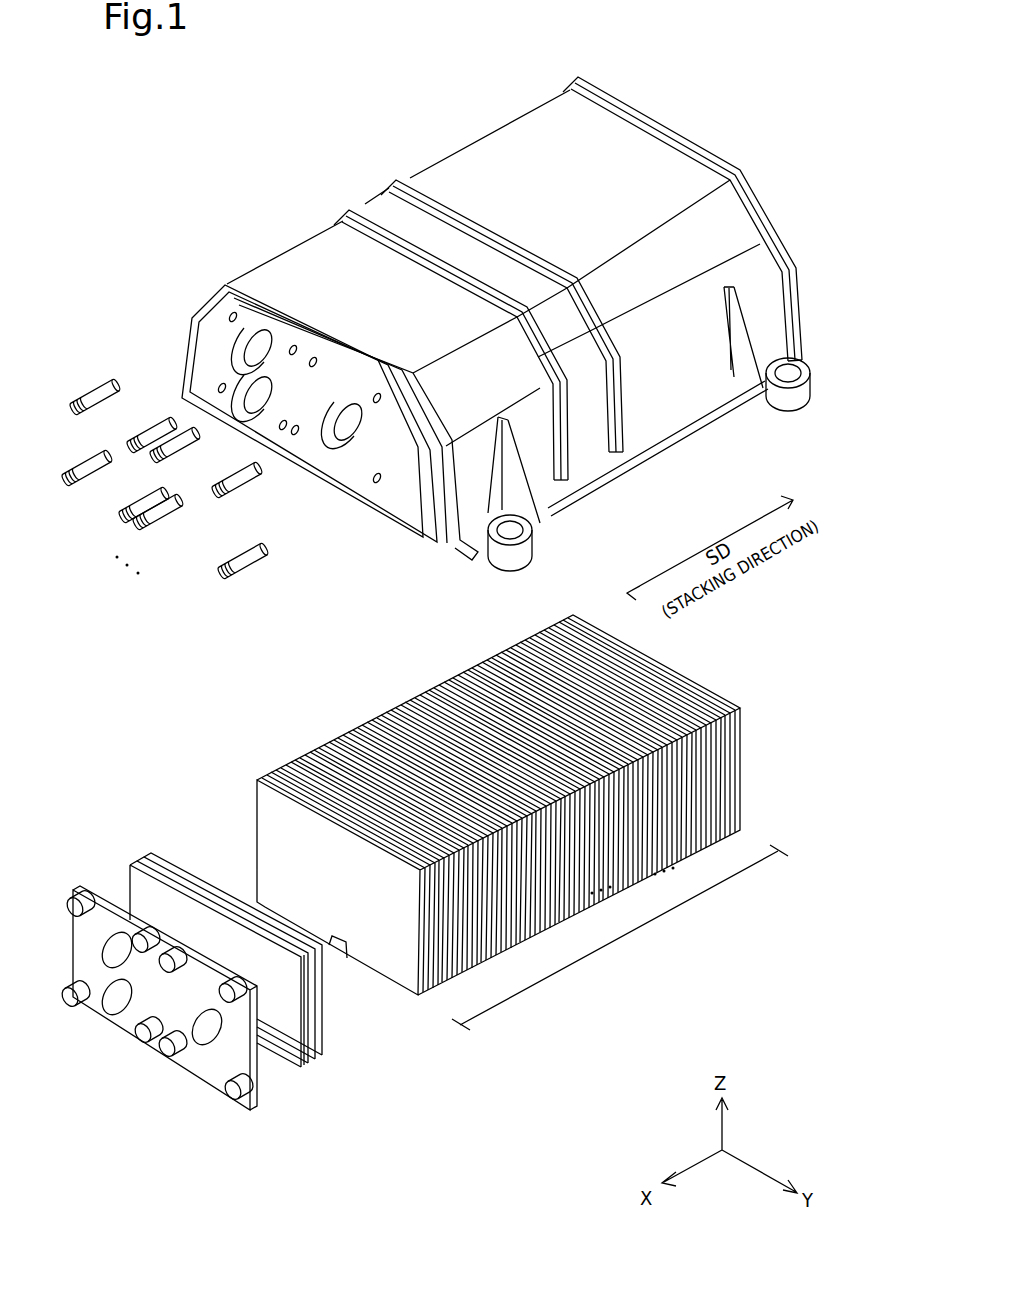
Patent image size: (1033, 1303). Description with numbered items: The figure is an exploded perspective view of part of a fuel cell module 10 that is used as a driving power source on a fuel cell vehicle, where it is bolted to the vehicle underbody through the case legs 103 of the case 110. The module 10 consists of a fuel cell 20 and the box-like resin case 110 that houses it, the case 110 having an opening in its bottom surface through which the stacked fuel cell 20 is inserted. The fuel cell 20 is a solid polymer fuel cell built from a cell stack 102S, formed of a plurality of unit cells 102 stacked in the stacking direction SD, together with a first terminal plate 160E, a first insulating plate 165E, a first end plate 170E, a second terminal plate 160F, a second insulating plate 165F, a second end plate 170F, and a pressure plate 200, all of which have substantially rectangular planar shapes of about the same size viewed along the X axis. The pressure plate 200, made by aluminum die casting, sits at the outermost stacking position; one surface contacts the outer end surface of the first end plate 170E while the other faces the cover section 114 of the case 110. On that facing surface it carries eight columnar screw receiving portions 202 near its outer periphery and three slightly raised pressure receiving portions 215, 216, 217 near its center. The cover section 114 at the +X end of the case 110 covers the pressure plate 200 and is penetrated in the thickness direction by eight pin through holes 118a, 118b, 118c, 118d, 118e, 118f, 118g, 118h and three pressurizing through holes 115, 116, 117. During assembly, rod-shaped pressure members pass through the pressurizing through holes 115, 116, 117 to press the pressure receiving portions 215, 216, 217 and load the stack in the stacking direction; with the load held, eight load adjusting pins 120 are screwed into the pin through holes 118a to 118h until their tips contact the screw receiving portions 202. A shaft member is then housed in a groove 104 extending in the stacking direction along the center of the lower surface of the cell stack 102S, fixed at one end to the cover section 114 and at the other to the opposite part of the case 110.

The fuel cell module 10 is at (106, 160).
The case 110 is at (490, 170).
The cover section 114 is at (222, 322).
The pressurizing through hole 115 is at (246, 340).
The pressurizing through hole 116 is at (252, 378).
The pressurizing through hole 117 is at (349, 443).
The pin through hole 118a is at (218, 387).
The pin through hole 118b is at (284, 432).
The pin through hole 118c is at (299, 437).
The pin through hole 118d is at (378, 485).
The pin through hole 118e is at (234, 310).
The pin through hole 118f is at (292, 343).
The pin through hole 118g is at (316, 355).
The pin through hole 118h is at (380, 392).
The load adjusting pin 120 is at (238, 560).
The case leg 103 is at (541, 542).
The fuel cell 20 is at (507, 837).
The unit cell 102 is at (606, 865).
The cell stack 102S is at (649, 927).
The groove 104 is at (347, 956).
The second terminal plate 160F is at (683, 690).
The second insulating plate 165F is at (722, 700).
The second end plate 170F is at (746, 712).
The pressure plate 200 is at (165, 998).
The screw receiving portion 202 is at (160, 958).
The pressure receiving portion 215 is at (107, 947).
The pressure receiving portion 216 is at (105, 990).
The pressure receiving portion 217 is at (252, 965).
The first terminal plate 160E is at (318, 998).
The first insulating plate 165E is at (322, 1005).
The first end plate 170E is at (294, 1022).